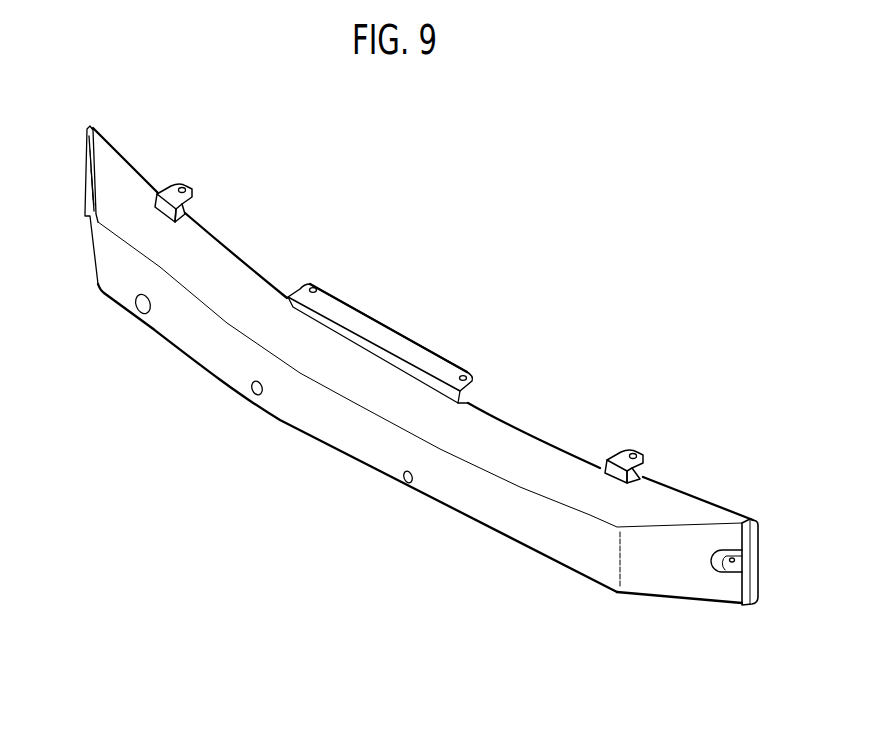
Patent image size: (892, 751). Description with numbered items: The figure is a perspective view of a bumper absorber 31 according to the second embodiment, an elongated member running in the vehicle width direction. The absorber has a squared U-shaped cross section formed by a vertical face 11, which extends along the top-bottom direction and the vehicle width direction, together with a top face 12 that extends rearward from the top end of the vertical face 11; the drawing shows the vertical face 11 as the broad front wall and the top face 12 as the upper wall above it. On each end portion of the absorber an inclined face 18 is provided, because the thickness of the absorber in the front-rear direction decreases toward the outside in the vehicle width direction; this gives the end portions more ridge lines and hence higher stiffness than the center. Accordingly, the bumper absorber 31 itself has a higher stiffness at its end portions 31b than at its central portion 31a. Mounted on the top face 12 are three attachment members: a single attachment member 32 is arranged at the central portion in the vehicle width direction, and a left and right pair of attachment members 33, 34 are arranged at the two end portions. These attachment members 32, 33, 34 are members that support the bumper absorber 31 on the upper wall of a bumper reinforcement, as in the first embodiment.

The vertical face 11 is at (502, 522).
The top face 12 is at (518, 447).
The inclined face 18 is at (662, 587).
The bumper absorber 31 is at (702, 447).
The central portion 31a is at (327, 430).
The end portions 31b is at (588, 560).
The attachment member 32 is at (398, 342).
The attachment member 33 is at (170, 192).
The attachment member 34 is at (620, 453).